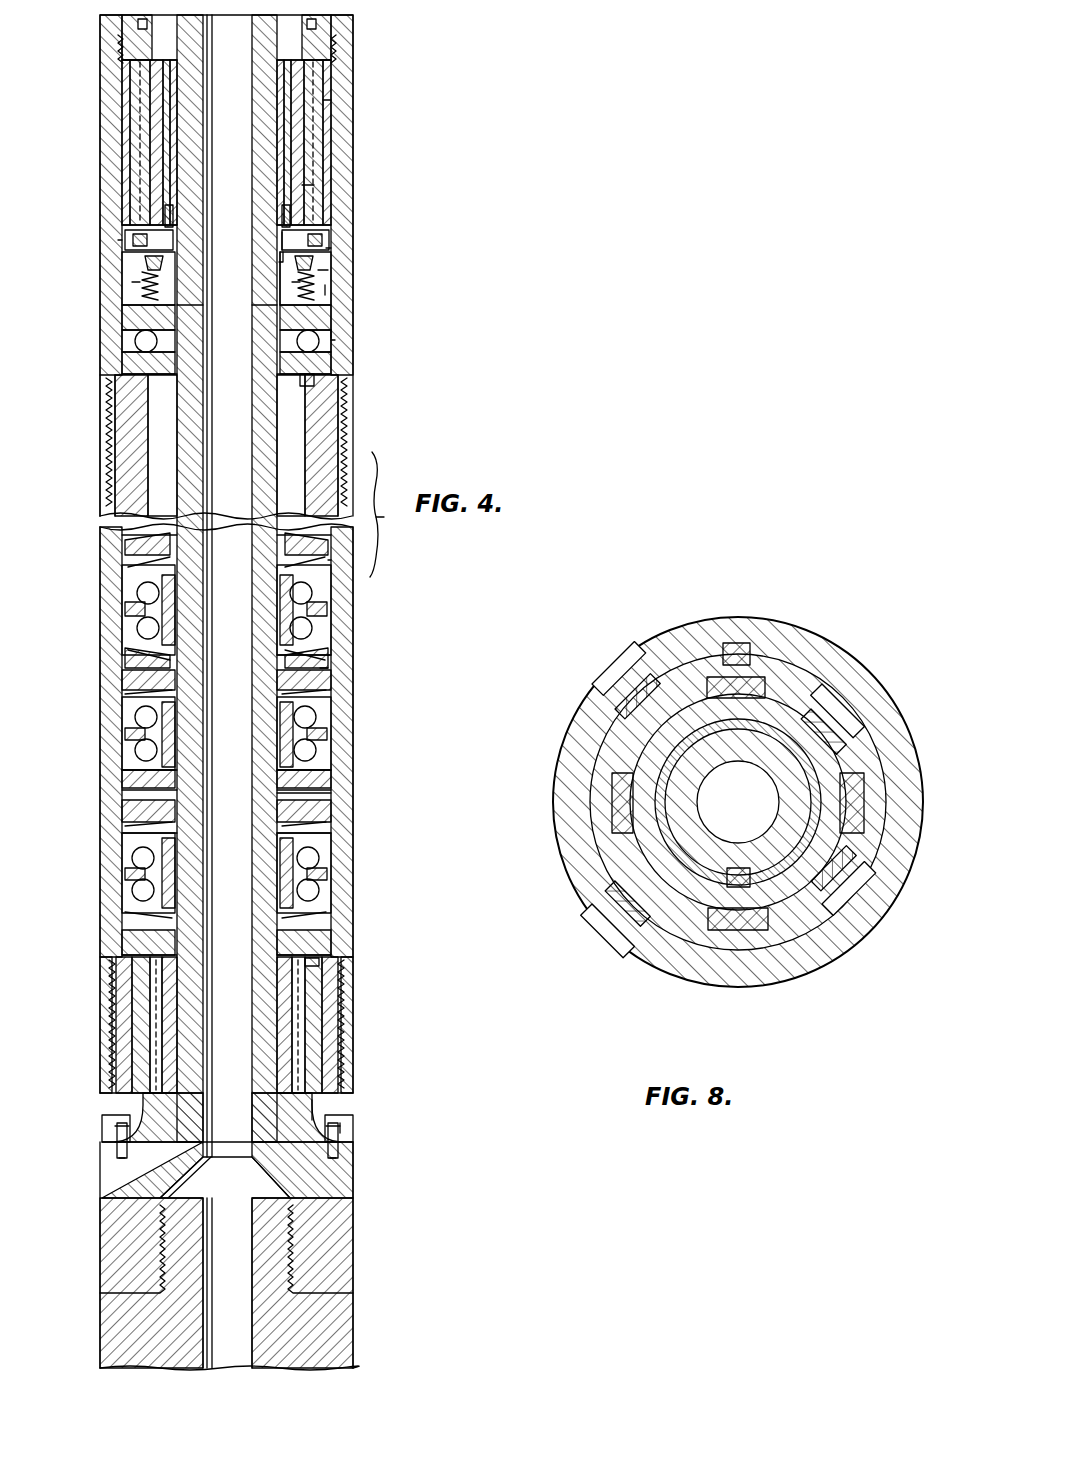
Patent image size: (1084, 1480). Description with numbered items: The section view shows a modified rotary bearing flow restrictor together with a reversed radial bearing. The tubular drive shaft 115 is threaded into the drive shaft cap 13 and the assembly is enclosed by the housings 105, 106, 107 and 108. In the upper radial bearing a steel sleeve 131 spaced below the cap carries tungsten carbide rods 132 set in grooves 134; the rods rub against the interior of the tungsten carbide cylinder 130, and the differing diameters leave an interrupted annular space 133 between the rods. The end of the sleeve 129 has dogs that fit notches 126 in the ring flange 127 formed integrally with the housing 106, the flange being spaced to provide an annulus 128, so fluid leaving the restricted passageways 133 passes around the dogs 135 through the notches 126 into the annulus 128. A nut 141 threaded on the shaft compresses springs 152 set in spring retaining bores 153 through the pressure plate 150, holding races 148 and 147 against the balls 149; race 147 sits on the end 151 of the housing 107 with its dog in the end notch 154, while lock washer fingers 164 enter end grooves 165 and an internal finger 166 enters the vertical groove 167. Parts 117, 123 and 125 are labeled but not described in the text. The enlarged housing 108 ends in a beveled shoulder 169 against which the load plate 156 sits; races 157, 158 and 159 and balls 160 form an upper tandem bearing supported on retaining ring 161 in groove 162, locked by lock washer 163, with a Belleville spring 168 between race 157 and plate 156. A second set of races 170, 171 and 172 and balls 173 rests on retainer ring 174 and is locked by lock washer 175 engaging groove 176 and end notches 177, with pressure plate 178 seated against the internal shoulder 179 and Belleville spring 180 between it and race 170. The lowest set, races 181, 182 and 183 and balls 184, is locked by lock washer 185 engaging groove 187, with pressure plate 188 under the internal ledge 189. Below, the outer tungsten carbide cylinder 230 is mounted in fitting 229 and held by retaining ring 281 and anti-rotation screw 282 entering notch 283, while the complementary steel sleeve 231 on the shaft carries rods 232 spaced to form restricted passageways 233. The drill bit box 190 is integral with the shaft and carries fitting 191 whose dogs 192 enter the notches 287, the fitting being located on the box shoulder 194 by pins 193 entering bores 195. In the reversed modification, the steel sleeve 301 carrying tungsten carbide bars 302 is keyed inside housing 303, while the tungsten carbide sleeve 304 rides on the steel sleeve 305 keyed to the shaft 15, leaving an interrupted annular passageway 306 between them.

In FIG. 4, the drive shaft cap 13 is at (170, 22).
In FIG. 8, the tubular drive shaft 15 is at (745, 752).
In FIG. 4, the housing 105 is at (346, 28).
In FIG. 4, the housing 106 is at (356, 127).
In FIG. 4, the housing 107 is at (98, 513).
In FIG. 4, the housing 108 is at (340, 611).
In FIG. 4, the tubular drive shaft 115 is at (197, 86).
In FIG. 4, the sleeve 117 is at (300, 203).
In FIG. 4, the slot 123 is at (140, 178).
In FIG. 4, the shoulder 125 is at (300, 233).
In FIG. 4, the notches 126 is at (300, 240).
In FIG. 4, the ring flange 127 is at (170, 232).
In FIG. 4, the annulus 128 is at (122, 216).
In FIG. 4, the sleeve 129 is at (340, 110).
In FIG. 4, the tungsten carbide cylinder 130 is at (320, 150).
In FIG. 4, the sleeve 131 is at (160, 147).
In FIG. 4, the tungsten carbide rods 132 is at (128, 150).
In FIG. 4, the interrupted annular space 133 is at (140, 118).
In FIG. 4, the grooves 134 is at (297, 143).
In FIG. 4, the dogs 135 is at (122, 236).
In FIG. 4, the nut 141 is at (317, 262).
In FIG. 4, the race 147 is at (331, 362).
In FIG. 4, the race 148 is at (332, 335).
In FIG. 4, the balls 149 is at (336, 345).
In FIG. 4, the pressure plate 150 is at (322, 290).
In FIG. 4, the end 151 is at (150, 368).
In FIG. 4, the springs 152 is at (140, 318).
In FIG. 4, the spring retaining bores 153 is at (140, 280).
In FIG. 4, the end notch 154 is at (290, 392).
In FIG. 4, the load plate 156 is at (320, 552).
In FIG. 4, the race 157 is at (135, 575).
In FIG. 4, the race 158 is at (138, 612).
In FIG. 4, the race 159 is at (132, 648).
In FIG. 4, the balls 160 is at (322, 593).
In FIG. 4, the retaining ring 161 is at (325, 674).
In FIG. 4, the groove 162 is at (290, 660).
In FIG. 4, the lock washer 163 is at (132, 668).
In FIG. 4, the fingers 164 is at (306, 262).
In FIG. 4, the notches 165 is at (322, 274).
In FIG. 4, the internal finger 166 is at (252, 308).
In FIG. 4, the groove 167 is at (176, 276).
In FIG. 4, the Belleville spring 168 is at (340, 563).
In FIG. 4, the beveled shoulder 169 is at (140, 548).
In FIG. 4, the race 170 is at (325, 704).
In FIG. 4, the race 171 is at (335, 740).
In FIG. 4, the race 172 is at (331, 770).
In FIG. 4, the balls 173 is at (331, 724).
In FIG. 4, the retainer ring 174 is at (297, 790).
In FIG. 4, the lock washer 175 is at (125, 796).
In FIG. 4, the groove 176 is at (290, 765).
In FIG. 4, the end notches 177 is at (325, 788).
In FIG. 4, the pressure plate 178 is at (332, 686).
In FIG. 4, the internal shoulder 179 is at (145, 690).
In FIG. 4, the Belleville spring 180 is at (290, 688).
In FIG. 4, the race 181 is at (335, 842).
In FIG. 4, the race 182 is at (331, 880).
In FIG. 4, the race 183 is at (331, 908).
In FIG. 4, the balls 184 is at (136, 888).
In FIG. 4, the lock washer 185 is at (140, 926).
In FIG. 4, the groove 187 is at (290, 903).
In FIG. 4, the pressure plate 188 is at (335, 816).
In FIG. 4, the internal ledge 189 is at (125, 818).
In FIG. 4, the drill bit box 190 is at (335, 1216).
In FIG. 4, the fitting 191 is at (345, 1123).
In FIG. 4, the dogs 192 is at (143, 1105).
In FIG. 4, the pins 193 is at (118, 1150).
In FIG. 4, the drill bit box shoulder 194 is at (130, 1142).
In FIG. 4, the bores 195 is at (318, 1110).
In FIG. 4, the fitting 229 is at (340, 1012).
In FIG. 4, the outer tungsten carbide cylinder 230 is at (331, 990).
In FIG. 4, the steel sleeve 231 is at (290, 1013).
In FIG. 4, the tungsten carbide rods 232 is at (300, 1040).
In FIG. 4, the restricted passageways 233 is at (122, 1012).
In FIG. 4, the retaining ring 281 is at (331, 1085).
In FIG. 4, the anti-rotation screw 282 is at (325, 960).
In FIG. 4, the notch 283 is at (331, 950).
In FIG. 4, the notches 287 is at (300, 1090).
In FIG. 8, the steel sleeve 301 is at (687, 930).
In FIG. 8, the tungsten carbide bars 302 is at (828, 728).
In FIG. 8, the housing 303 is at (783, 635).
In FIG. 8, the tungsten carbide sleeve 304 is at (695, 712).
In FIG. 8, the steel sleeve 305 is at (755, 728).
In FIG. 8, the interrupted annular passageway 306 is at (632, 758).